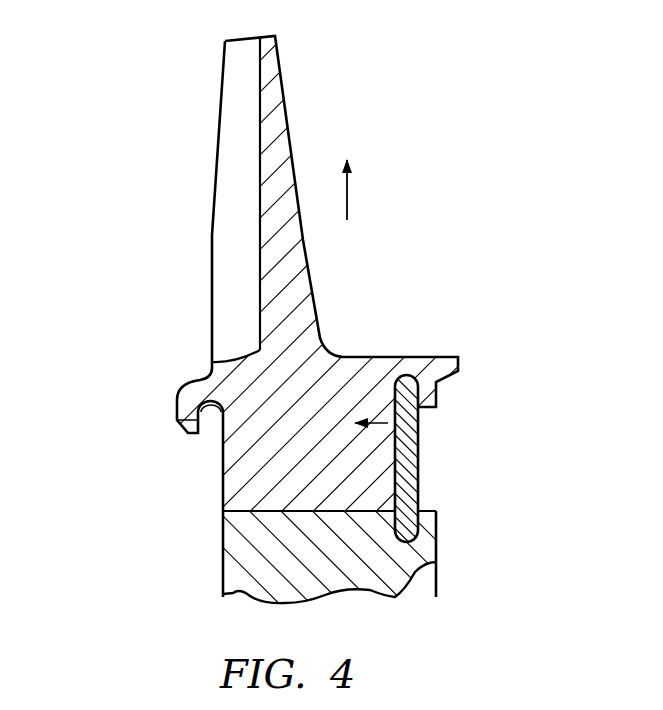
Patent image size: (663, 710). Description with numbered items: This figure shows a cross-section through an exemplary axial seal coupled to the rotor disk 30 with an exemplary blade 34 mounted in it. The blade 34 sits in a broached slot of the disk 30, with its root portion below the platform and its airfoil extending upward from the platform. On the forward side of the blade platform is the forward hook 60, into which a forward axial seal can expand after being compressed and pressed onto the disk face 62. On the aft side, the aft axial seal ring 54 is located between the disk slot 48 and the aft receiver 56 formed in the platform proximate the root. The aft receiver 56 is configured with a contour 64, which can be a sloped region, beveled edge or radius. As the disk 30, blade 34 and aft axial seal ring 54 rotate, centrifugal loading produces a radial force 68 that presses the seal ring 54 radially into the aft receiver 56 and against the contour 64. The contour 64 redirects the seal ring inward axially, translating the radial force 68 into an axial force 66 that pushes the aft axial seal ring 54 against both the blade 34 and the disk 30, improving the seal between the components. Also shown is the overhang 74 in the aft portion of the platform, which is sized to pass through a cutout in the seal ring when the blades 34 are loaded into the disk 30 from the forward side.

The rotor disk 30 is at (257, 587).
The blade 34 is at (208, 101).
The disk slot 48 is at (422, 539).
The aft axial seal ring 54 is at (418, 453).
The aft receiver 56 is at (403, 373).
The forward hook 60 is at (210, 436).
The disk face 62 is at (211, 553).
The contour 64 is at (425, 372).
The axial force 66 is at (377, 423).
The radial force 68 is at (347, 192).
The overhang 74 is at (437, 388).